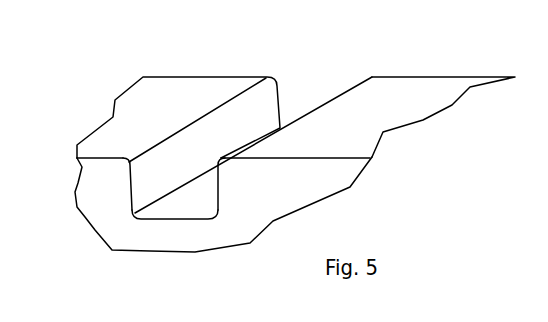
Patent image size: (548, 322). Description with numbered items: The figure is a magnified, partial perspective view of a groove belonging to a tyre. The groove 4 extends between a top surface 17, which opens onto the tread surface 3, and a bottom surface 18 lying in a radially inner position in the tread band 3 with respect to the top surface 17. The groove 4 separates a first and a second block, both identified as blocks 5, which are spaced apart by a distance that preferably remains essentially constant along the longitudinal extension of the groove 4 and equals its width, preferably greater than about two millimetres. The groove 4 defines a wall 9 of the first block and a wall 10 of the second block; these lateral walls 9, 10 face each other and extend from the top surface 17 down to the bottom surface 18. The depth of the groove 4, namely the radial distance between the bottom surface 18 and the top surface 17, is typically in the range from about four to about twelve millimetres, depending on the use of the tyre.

The tread surface 3 is at (95, 198).
The groove 4 is at (305, 85).
The block 5 is at (173, 103).
The wall of the first block 9 is at (147, 172).
The wall of the second block 10 is at (218, 181).
The top surface of the groove 17 is at (134, 122).
The bottom surface of the groove 18 is at (188, 211).